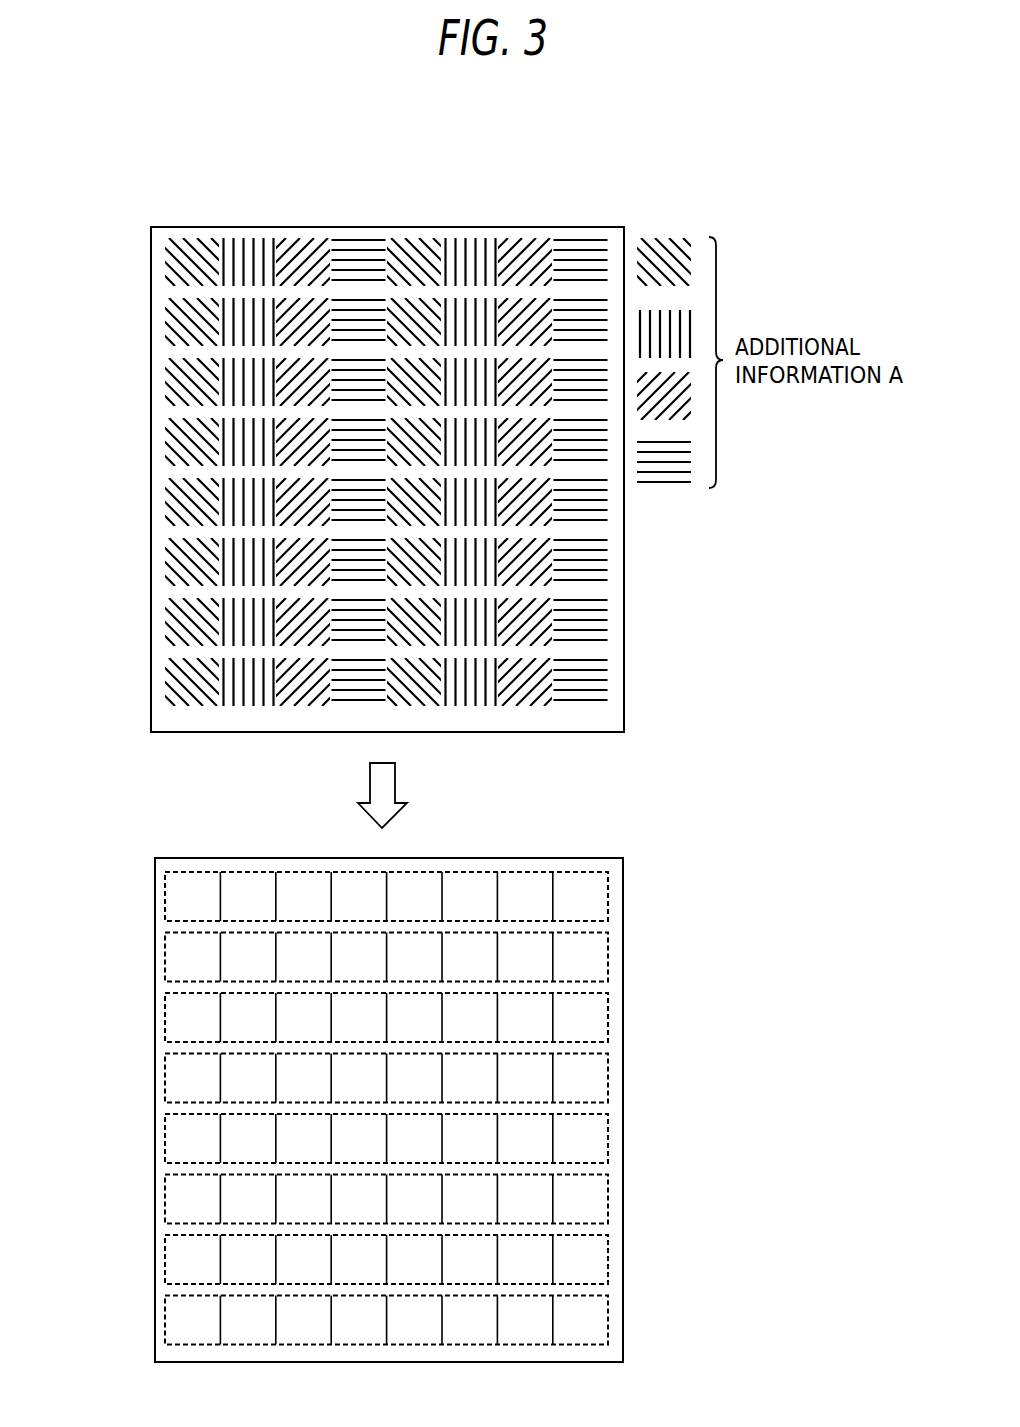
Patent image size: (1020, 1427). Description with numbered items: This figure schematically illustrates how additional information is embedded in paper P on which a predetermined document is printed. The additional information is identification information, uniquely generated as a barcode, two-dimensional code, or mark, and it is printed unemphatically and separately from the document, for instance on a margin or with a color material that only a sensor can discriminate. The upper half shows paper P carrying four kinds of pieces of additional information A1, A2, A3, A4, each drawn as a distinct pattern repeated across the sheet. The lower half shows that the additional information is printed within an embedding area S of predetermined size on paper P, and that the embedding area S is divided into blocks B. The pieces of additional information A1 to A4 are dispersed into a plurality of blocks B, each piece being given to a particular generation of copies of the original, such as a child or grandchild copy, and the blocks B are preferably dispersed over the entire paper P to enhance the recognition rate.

The first piece of additional information A1 is at (200, 247).
The second piece of additional information A2 is at (257, 249).
The third piece of additional information A3 is at (310, 247).
The fourth piece of additional information A4 is at (360, 249).
The paper P is at (560, 227).
The block B is at (176, 898).
The embedding area S is at (614, 1081).